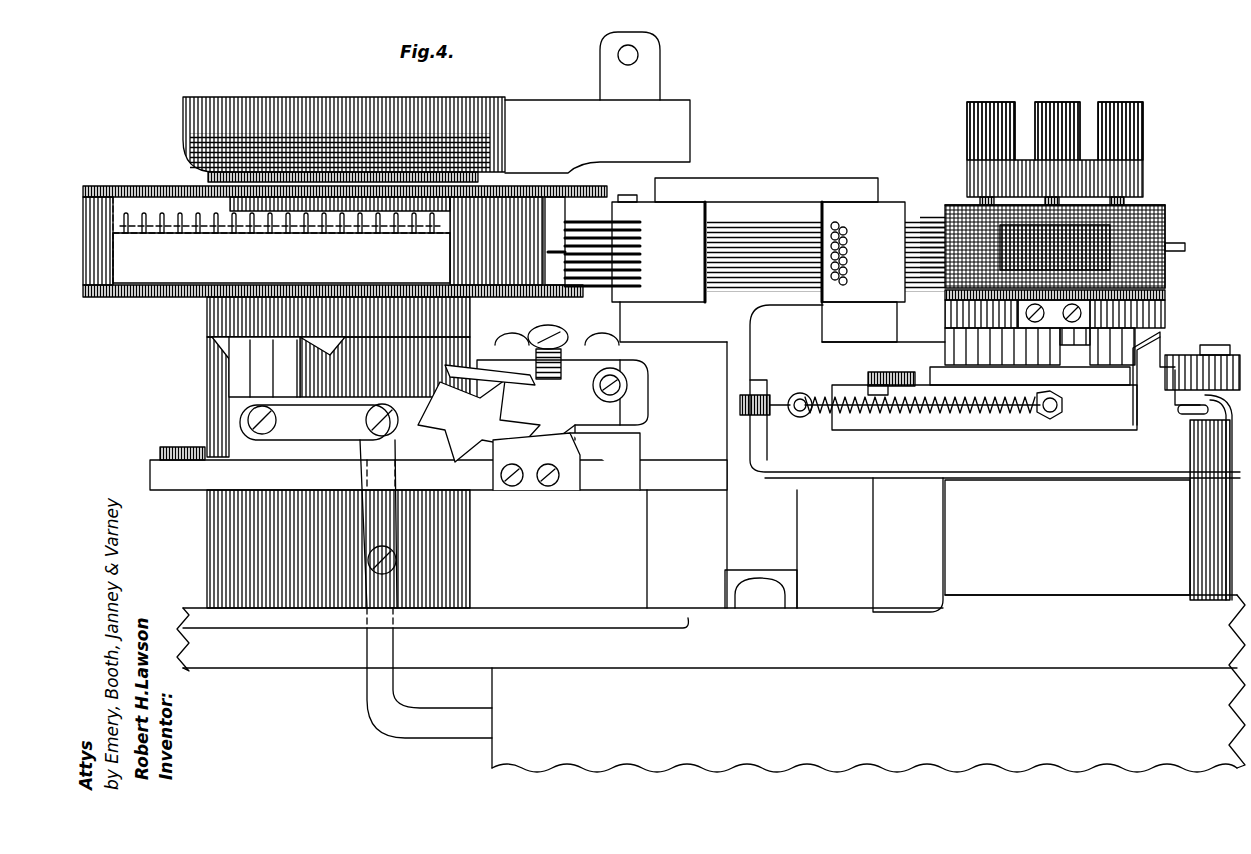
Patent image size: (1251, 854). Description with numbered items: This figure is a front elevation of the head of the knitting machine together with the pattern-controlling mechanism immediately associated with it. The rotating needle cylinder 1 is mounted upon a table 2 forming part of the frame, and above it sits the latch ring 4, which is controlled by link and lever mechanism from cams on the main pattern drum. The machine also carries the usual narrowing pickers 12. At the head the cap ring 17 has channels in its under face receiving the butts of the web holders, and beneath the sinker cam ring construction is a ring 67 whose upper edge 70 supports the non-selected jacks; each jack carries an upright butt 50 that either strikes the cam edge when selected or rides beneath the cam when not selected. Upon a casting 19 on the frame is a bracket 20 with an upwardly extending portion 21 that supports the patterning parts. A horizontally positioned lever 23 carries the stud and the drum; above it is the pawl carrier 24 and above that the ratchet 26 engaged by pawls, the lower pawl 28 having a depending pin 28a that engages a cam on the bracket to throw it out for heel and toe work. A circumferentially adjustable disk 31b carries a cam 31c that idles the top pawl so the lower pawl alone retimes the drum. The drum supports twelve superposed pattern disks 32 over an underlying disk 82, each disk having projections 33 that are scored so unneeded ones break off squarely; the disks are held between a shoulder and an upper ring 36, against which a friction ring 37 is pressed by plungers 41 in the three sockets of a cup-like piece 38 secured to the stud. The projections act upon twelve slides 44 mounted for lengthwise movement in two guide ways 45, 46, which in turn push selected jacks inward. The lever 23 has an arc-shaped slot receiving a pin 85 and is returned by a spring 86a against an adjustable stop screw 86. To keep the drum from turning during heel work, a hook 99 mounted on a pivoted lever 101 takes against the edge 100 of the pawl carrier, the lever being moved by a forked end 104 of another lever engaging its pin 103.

The needle cylinder 1 is at (225, 316).
The table 2 is at (1075, 660).
The latch ring 4 is at (512, 110).
The narrowing pickers 12 is at (487, 372).
The cap ring 17 is at (520, 188).
The casting 19 is at (965, 533).
The bracket 20 is at (930, 472).
The upwardly extending portion 21 is at (790, 362).
The lever 23 is at (920, 425).
The pawl carrier 24 is at (1112, 375).
The ratchet 26 is at (960, 338).
The lower pawl 28 is at (960, 400).
The depending pin 28a is at (925, 388).
The disk 31b is at (960, 316).
The cam 31c is at (1082, 313).
The pattern disks 32 is at (1210, 212).
The projections 33 is at (1100, 250).
The upper ring 36 is at (1160, 218).
The friction ring 37 is at (1148, 207).
The cup-like piece 38 is at (955, 120).
The pin or plunger 41 is at (980, 201).
The slides 44 is at (748, 255).
The housing or guide way 45 is at (682, 294).
The housing or guide way 46 is at (873, 292).
The upright butt 50 is at (140, 218).
The ring 67 is at (165, 296).
The upper edge 70 is at (205, 283).
The underlying disk 82 is at (1165, 295).
The pin 85 is at (893, 375).
The adjustable stop screw 86 is at (742, 412).
The spring 86a is at (1040, 410).
The hook 99 is at (1150, 352).
The edge 100 is at (1195, 375).
The lever 101 is at (1185, 405).
The pin 103 is at (1197, 412).
The forked end 104 is at (1215, 415).